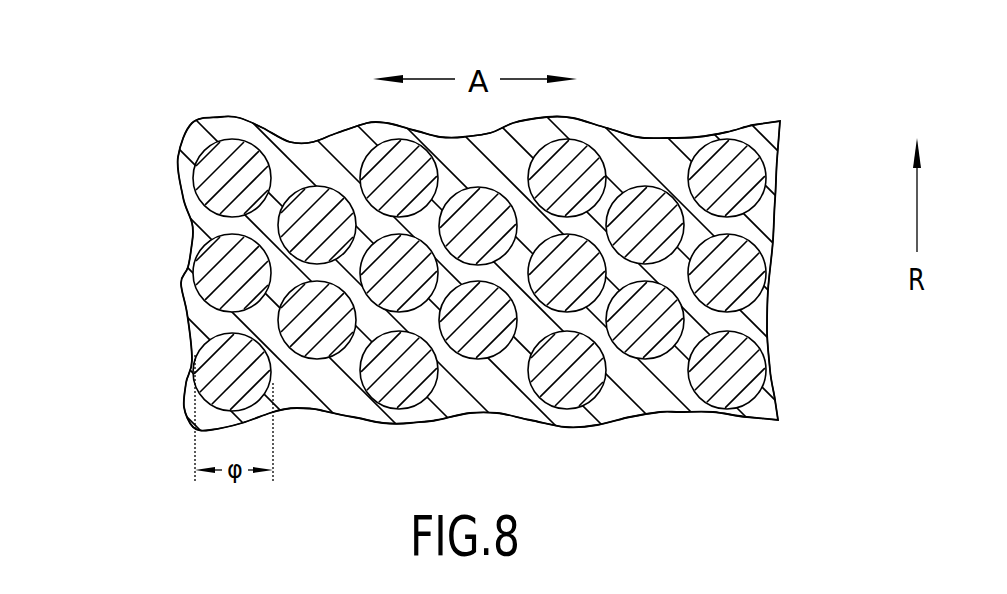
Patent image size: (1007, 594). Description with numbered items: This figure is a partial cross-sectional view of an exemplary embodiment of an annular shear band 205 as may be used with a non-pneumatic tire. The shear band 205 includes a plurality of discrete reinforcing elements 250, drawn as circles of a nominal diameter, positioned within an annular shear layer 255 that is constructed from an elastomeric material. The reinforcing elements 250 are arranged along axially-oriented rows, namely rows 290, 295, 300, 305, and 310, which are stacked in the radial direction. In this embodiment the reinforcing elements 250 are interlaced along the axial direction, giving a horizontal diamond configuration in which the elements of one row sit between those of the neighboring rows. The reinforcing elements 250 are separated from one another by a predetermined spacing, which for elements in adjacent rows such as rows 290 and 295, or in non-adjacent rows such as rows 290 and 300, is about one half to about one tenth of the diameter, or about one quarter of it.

The shear band 205 is at (176, 66).
The reinforcing elements 250 is at (735, 160).
The shear layer 255 is at (650, 398).
The row 290 is at (145, 181).
The row 295 is at (145, 228).
The row 300 is at (145, 277).
The row 305 is at (145, 324).
The row 310 is at (145, 372).